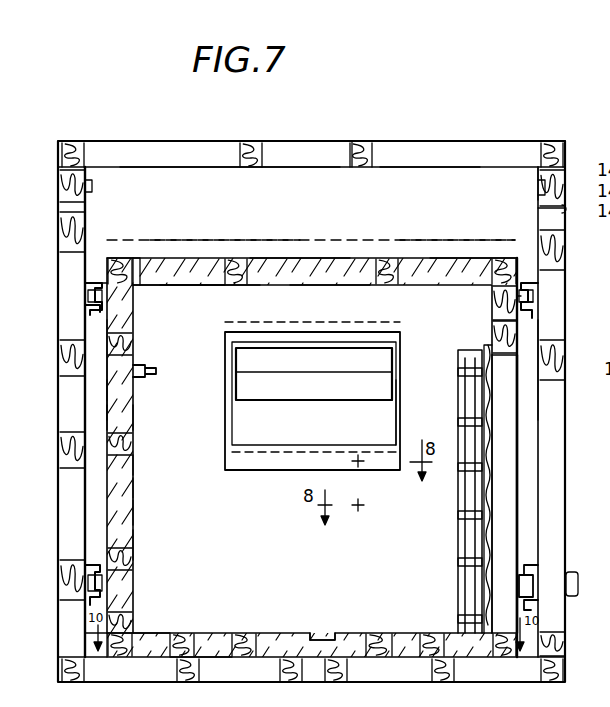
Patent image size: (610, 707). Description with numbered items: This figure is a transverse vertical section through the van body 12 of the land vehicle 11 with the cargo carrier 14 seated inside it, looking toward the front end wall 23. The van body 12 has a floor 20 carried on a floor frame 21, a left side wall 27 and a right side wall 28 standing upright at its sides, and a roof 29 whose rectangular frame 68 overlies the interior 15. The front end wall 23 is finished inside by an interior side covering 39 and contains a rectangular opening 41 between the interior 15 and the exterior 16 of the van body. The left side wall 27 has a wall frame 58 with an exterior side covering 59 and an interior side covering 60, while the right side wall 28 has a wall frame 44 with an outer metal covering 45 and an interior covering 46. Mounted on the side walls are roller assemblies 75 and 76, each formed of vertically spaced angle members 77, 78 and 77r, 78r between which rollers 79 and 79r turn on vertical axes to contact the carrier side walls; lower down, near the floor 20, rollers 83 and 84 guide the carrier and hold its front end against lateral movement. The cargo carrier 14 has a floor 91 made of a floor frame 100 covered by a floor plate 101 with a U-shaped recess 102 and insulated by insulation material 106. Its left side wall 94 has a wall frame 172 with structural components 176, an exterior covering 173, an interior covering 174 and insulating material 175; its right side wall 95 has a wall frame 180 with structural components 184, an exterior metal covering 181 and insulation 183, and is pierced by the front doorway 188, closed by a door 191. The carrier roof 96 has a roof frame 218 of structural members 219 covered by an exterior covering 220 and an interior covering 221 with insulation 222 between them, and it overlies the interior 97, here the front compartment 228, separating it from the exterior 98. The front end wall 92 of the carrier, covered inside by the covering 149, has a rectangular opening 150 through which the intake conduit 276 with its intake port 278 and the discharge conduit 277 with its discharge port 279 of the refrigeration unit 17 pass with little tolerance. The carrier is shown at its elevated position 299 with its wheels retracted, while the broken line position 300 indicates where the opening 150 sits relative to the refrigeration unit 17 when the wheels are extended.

The interior 15 is at (103, 165).
The interior side covering 39 is at (163, 168).
The rectangular frame 68 is at (256, 155).
The roof 29 is at (287, 152).
The van body 12 is at (353, 150).
The front end wall 23 is at (438, 172).
The land vehicle 11 is at (493, 146).
The exterior 16 is at (546, 146).
The right side wall 28 is at (561, 163).
The interior side covering 60 is at (92, 186).
The exterior side covering 59 is at (92, 203).
The wall frame 58 is at (72, 224).
The left side wall 27 is at (57, 283).
The roller assembly 75 is at (88, 297).
The rollers 79 is at (92, 308).
The angle member 78 is at (113, 343).
The cargo carrier 14 is at (122, 254).
The angle member 77 is at (96, 283).
The elevated position 299 is at (186, 240).
The exterior covering 220 is at (240, 258).
The front end wall 92 is at (160, 262).
The roof frame 218 is at (215, 262).
The exterior 98 is at (300, 258).
The roof 96 is at (287, 264).
The interior 97 is at (334, 264).
The structural members 219 is at (398, 264).
The insulation 222 is at (435, 250).
The covering 149 is at (472, 265).
The covering 46 is at (539, 188).
The metal covering 45 is at (543, 208).
The interior covering 221 is at (216, 285).
The broken line position 300 is at (325, 319).
The insulation 183 is at (497, 301).
The structural components 184 is at (498, 321).
The rectangular opening 150 is at (224, 344).
The intake conduit 276 is at (239, 378).
The intake port 278 is at (235, 380).
The refrigeration unit 17 is at (399, 366).
The rectangular opening 41 is at (398, 397).
The discharge port 279 is at (300, 402).
The discharge conduit 277 is at (320, 403).
The covering 173 is at (110, 390).
The left side wall 94 is at (108, 414).
The wall frame 172 is at (128, 434).
The structural components 176 is at (132, 463).
The insulating material 175 is at (130, 485).
The covering 174 is at (133, 512).
The front compartment 228 is at (135, 551).
The roller 83 is at (86, 585).
The floor 20 is at (105, 645).
The floor 91 is at (148, 634).
The floor frame 100 is at (190, 636).
The floor plate 101 is at (275, 634).
The U-shaped recess 102 is at (325, 637).
The insulation material 106 is at (348, 636).
The floor frame 21 is at (462, 681).
The angle member 77r is at (532, 274).
The rollers 79r is at (537, 296).
The roller assembly 76 is at (537, 305).
The angle member 78r is at (540, 328).
The wall frame 44 is at (564, 347).
The right side wall 95 is at (518, 425).
The metal covering 181 is at (517, 447).
The front doorway 188 is at (508, 471).
The door 191 is at (490, 503).
The roller 84 is at (540, 583).
The wall frame 180 is at (552, 641).